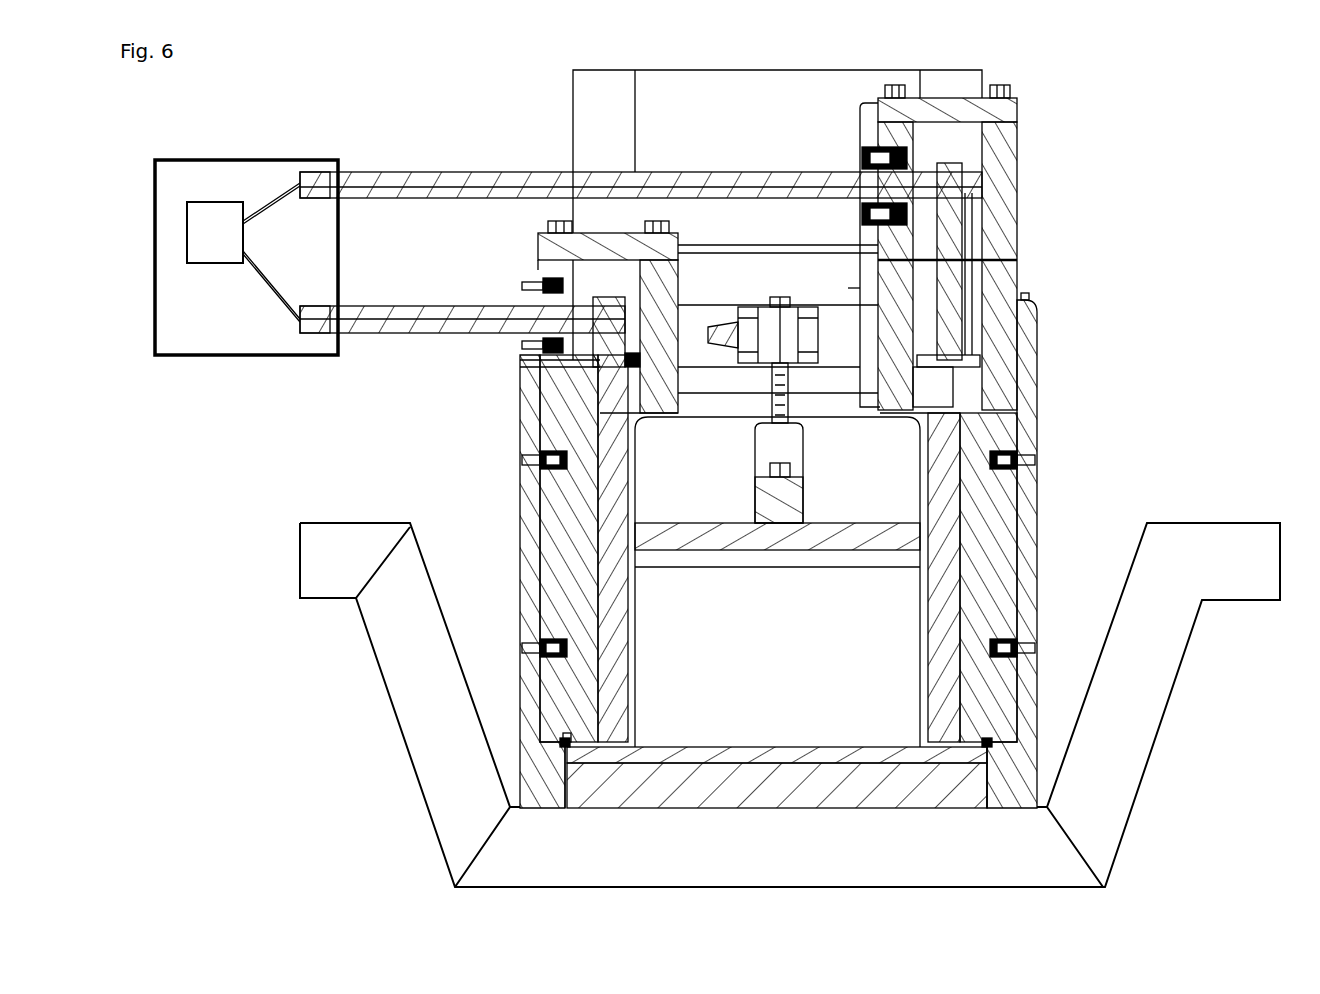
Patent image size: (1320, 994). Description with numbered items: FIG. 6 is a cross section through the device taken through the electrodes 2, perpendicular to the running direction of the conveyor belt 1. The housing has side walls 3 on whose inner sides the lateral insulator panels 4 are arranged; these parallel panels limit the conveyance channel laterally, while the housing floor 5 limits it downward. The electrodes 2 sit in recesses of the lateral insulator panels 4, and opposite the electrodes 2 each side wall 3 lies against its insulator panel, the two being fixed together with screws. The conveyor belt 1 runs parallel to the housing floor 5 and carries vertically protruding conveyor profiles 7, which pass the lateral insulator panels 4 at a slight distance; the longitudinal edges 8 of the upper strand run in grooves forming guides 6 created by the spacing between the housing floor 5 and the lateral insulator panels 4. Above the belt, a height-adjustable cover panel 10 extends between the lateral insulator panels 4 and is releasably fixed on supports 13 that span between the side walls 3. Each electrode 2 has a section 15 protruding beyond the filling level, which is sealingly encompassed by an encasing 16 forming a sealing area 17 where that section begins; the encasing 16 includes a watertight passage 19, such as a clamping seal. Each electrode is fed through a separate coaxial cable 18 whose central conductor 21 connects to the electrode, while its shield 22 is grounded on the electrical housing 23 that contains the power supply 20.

The conveyor belt 1 is at (966, 752).
The electrodes 2 is at (608, 508).
The side walls 3 is at (532, 400).
The lateral insulator panels 4 is at (566, 418).
The housing floor 5 is at (950, 782).
The guides 6 is at (565, 744).
The conveyor profiles 7 is at (868, 668).
The longitudinal edges 8 is at (573, 768).
The cover panel 10 is at (895, 528).
The supports 13 is at (853, 328).
The section 15 is at (977, 302).
The encasing 16 is at (848, 284).
The sealing area 17 is at (907, 388).
The coaxial cable 18 is at (395, 172).
The watertight passage 19 is at (870, 160).
The power supply 20 is at (215, 232).
The central conductor 21 is at (275, 198).
The shield 22 is at (298, 175).
The electrical housing 23 is at (197, 160).